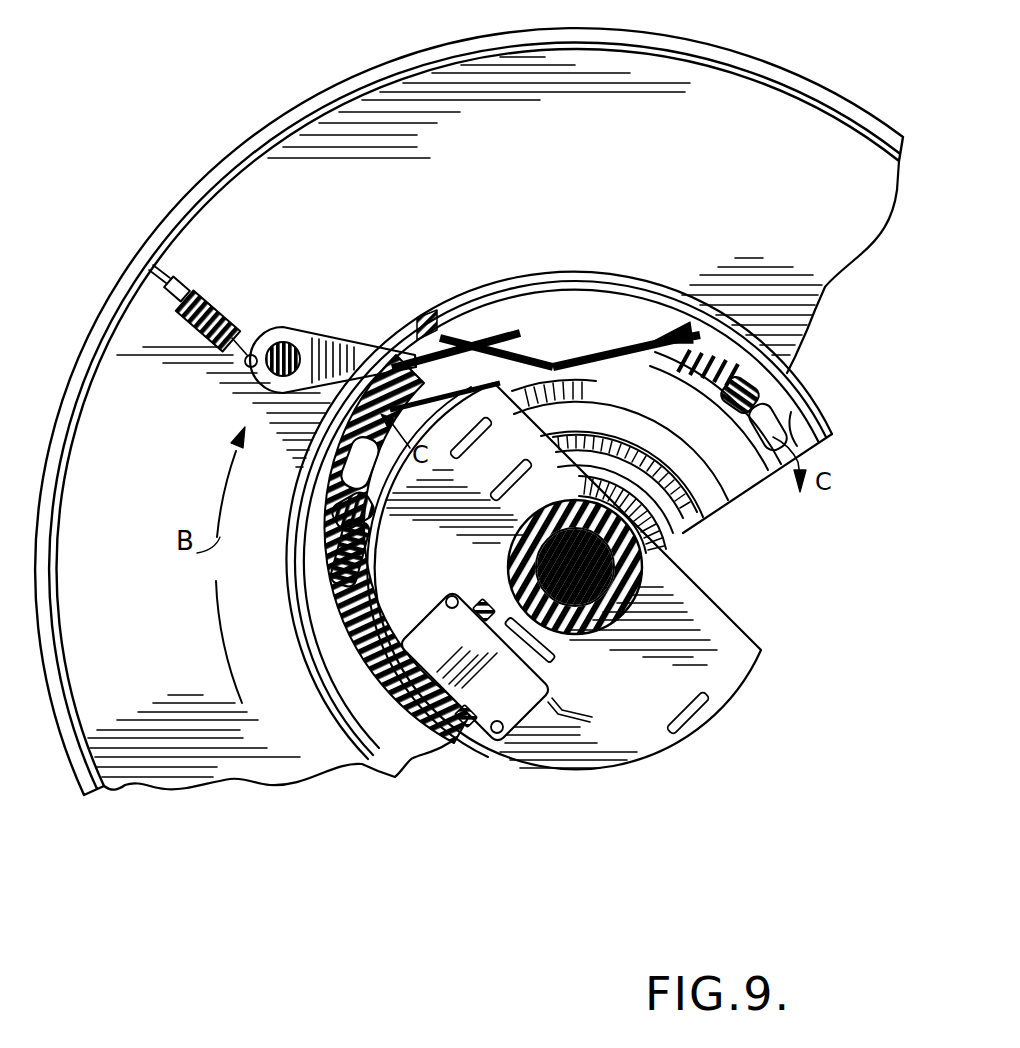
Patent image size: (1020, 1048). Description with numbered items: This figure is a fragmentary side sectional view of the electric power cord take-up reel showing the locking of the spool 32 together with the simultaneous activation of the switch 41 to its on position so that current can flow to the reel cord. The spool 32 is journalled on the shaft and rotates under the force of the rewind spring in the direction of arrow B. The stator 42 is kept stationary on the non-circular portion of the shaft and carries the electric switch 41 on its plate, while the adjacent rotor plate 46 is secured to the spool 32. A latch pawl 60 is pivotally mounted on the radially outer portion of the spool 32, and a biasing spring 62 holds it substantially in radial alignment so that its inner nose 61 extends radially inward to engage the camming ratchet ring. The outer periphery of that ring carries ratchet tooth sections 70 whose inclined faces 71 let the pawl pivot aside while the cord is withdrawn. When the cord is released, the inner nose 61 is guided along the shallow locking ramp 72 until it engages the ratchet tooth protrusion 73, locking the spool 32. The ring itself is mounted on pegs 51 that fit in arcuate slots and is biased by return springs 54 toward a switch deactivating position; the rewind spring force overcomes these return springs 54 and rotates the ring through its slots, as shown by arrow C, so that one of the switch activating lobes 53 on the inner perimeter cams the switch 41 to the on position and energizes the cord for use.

The spool 32 is at (207, 214).
The electric switch 41 is at (406, 630).
The stator 42 is at (703, 609).
The rotor plate 46 is at (713, 500).
The mounting pegs 51 is at (340, 510).
The switch activating lobes 53 is at (392, 690).
The return springs 54 is at (367, 553).
The latch pawl 60 is at (275, 387).
The inner nose 61 is at (388, 333).
The biasing spring 62 is at (218, 301).
The ratchet tooth sections 70 is at (432, 440).
The inclined faces 71 is at (543, 307).
The locking ramp 72 is at (303, 473).
The ratchet tooth protrusion 73 is at (433, 320).